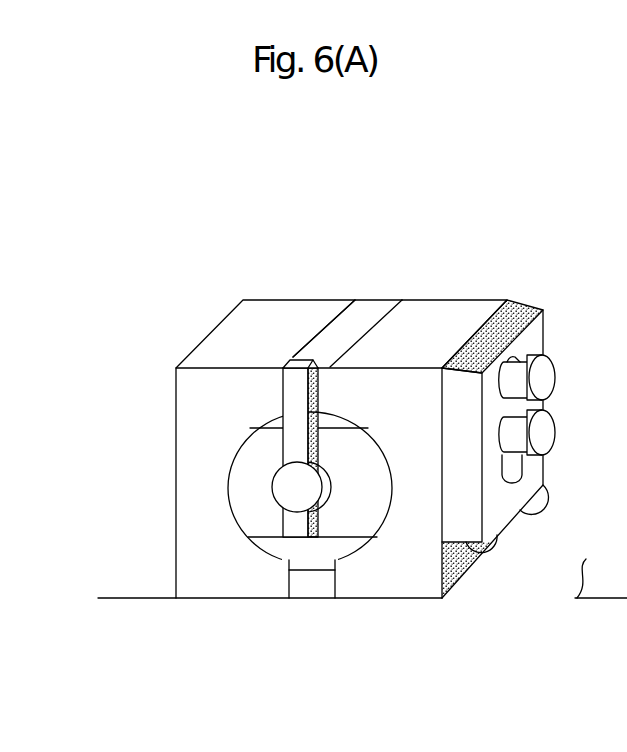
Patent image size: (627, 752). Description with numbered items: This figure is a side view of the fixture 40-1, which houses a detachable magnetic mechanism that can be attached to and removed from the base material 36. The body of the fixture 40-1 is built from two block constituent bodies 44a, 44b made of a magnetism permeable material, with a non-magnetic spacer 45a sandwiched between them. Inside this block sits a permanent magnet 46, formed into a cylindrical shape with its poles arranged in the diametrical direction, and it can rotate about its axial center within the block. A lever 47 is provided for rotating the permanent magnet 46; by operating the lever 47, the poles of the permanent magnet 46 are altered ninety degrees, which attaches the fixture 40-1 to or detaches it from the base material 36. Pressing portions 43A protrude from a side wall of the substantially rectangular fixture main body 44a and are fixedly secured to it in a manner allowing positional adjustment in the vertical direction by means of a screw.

The fixture 40-1 is at (138, 325).
The base material 36 is at (143, 563).
The block constituent body 44a is at (247, 330).
The non-magnetic spacer 45a is at (360, 313).
The block constituent body 44b is at (425, 325).
The permanent magnet 46 is at (250, 495).
The lever 47 is at (290, 402).
The pressing portions 43A is at (505, 335).